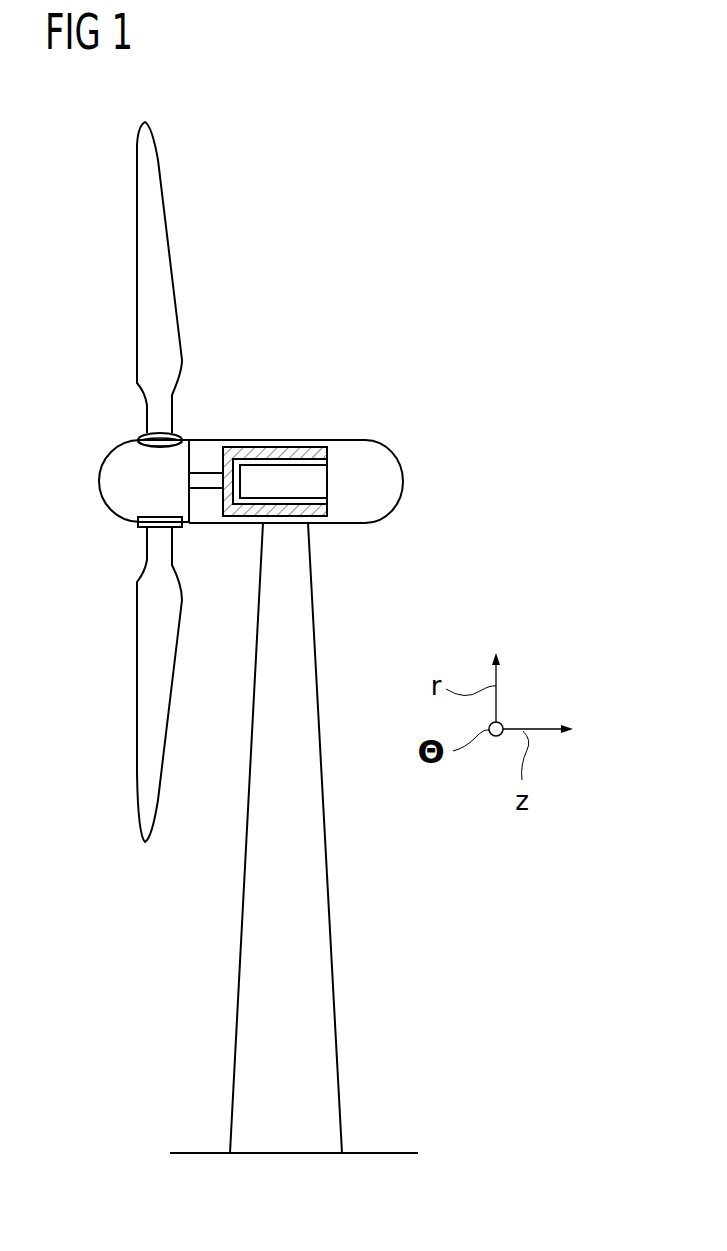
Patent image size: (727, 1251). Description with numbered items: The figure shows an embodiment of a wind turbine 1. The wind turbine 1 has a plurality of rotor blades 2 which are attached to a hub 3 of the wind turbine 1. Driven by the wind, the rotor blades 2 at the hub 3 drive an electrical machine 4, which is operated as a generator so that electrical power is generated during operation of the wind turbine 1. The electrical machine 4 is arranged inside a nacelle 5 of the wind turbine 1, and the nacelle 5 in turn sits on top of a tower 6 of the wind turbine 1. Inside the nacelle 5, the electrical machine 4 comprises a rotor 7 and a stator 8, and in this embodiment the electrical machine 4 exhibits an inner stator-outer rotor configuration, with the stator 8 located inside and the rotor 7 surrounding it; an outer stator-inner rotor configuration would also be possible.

The wind turbine 1 is at (387, 211).
The rotor blades 2 is at (148, 312).
The hub 3 is at (113, 482).
The electrical machine 4 is at (310, 441).
The nacelle 5 is at (360, 440).
The tower 6 is at (318, 915).
The rotor 7 is at (275, 450).
The stator 8 is at (327, 478).